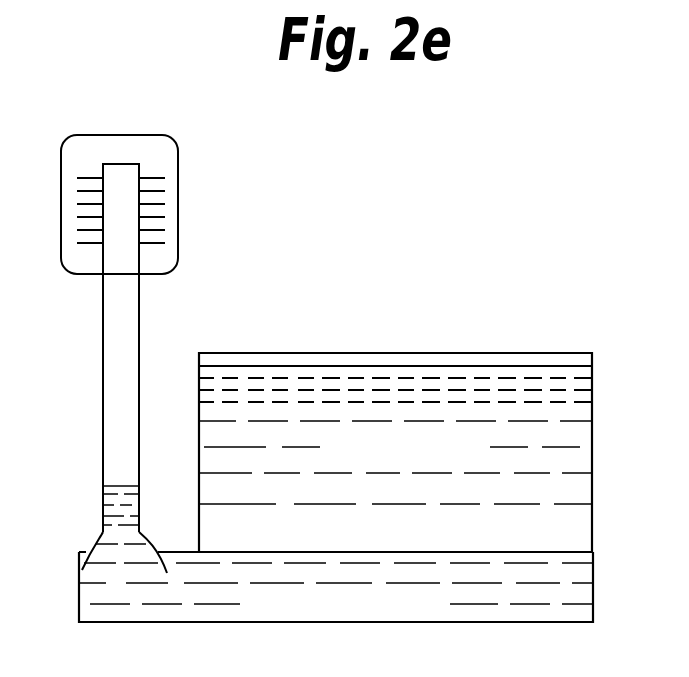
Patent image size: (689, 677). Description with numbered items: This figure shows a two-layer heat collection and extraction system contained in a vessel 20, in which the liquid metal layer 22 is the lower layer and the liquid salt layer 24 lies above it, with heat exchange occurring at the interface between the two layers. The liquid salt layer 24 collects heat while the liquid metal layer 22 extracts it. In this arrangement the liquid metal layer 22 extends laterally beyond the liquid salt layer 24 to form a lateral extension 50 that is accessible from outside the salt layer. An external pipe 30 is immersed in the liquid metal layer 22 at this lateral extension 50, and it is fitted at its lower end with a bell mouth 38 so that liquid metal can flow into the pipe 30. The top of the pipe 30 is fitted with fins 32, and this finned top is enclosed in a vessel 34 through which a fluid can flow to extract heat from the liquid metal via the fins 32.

The vessel 20 is at (446, 623).
The liquid metal layer 22 is at (587, 585).
The liquid salt layer 24 is at (586, 430).
The pipe 30 is at (103, 365).
The fins 32 is at (163, 192).
The vessel 34 is at (178, 152).
The bell mouth 38 is at (92, 544).
The lateral extension 50 is at (92, 595).